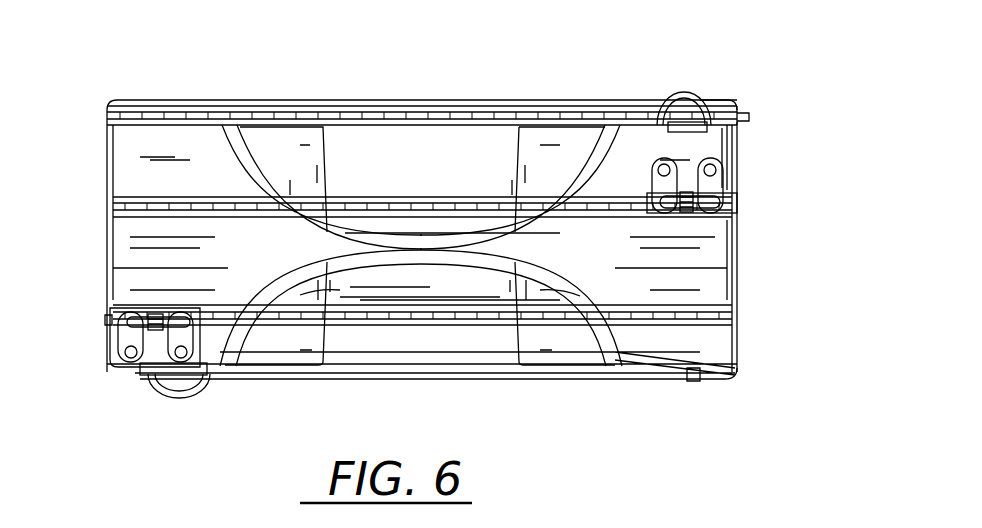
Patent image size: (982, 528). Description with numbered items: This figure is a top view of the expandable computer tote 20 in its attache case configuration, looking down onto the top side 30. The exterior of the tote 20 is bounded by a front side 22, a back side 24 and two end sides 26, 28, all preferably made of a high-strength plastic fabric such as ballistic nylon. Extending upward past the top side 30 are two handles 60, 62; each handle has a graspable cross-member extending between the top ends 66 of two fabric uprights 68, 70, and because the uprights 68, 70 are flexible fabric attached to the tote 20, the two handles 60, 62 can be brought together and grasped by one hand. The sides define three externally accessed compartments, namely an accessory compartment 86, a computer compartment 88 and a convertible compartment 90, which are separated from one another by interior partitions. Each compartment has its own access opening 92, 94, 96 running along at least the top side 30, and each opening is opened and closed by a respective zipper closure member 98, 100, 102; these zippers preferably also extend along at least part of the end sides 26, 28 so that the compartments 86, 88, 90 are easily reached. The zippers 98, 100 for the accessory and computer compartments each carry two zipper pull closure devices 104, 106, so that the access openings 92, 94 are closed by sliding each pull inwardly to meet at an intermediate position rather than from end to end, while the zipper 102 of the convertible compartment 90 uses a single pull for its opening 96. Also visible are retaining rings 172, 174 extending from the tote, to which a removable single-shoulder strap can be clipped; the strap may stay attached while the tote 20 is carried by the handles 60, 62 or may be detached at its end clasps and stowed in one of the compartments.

The expandable computer tote 20 is at (840, 125).
The front side 22 is at (687, 381).
The back side 24 is at (517, 101).
The end side 26 is at (107, 268).
The end side 28 is at (738, 250).
The top side 30 is at (690, 261).
The handle 60 is at (565, 360).
The handle 62 is at (316, 186).
The top ends 66 is at (298, 295).
The upright 68 is at (300, 171).
The upright 70 is at (595, 179).
The accessory compartment 86 is at (727, 337).
The computer compartment 88 is at (732, 192).
The convertible compartment 90 is at (731, 108).
The access opening 92 is at (104, 317).
The access opening 94 is at (107, 197).
The access opening 96 is at (750, 116).
The zipper closure member 98 is at (107, 334).
The zipper closure member 100 is at (107, 214).
The zipper closure member 102 is at (738, 133).
The zipper pull closure device 104 is at (666, 128).
The zipper pull closure device 106 is at (716, 178).
The retaining ring 172 is at (183, 393).
The retaining ring 174 is at (692, 97).